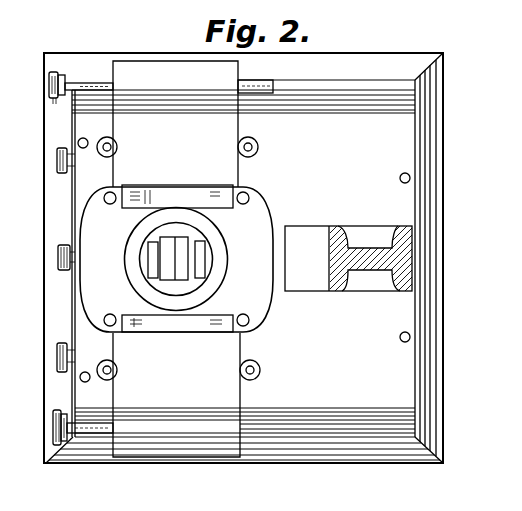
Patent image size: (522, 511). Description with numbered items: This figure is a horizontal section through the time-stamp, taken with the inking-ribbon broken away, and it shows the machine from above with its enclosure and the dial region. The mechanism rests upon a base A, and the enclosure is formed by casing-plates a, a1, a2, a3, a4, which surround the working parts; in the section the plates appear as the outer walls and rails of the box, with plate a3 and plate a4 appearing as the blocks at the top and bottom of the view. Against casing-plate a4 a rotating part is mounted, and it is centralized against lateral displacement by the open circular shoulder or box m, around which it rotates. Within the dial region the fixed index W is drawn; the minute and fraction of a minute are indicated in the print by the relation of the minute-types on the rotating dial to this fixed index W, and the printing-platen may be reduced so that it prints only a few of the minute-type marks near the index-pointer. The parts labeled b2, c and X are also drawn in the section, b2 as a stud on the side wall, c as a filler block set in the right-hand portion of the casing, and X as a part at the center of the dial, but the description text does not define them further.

The base A is at (253, 258).
The casing-plate a is at (75, 300).
The casing-plate a1 is at (188, 247).
The casing-plate a2 is at (90, 434).
The casing-plate a3 is at (462, 288).
The casing-plate a4 is at (224, 312).
The knob b2 is at (50, 163).
The filler block c is at (384, 262).
The fixed index W is at (213, 253).
The open circular shoulder or box m is at (214, 265).
The dial center plate X is at (212, 283).